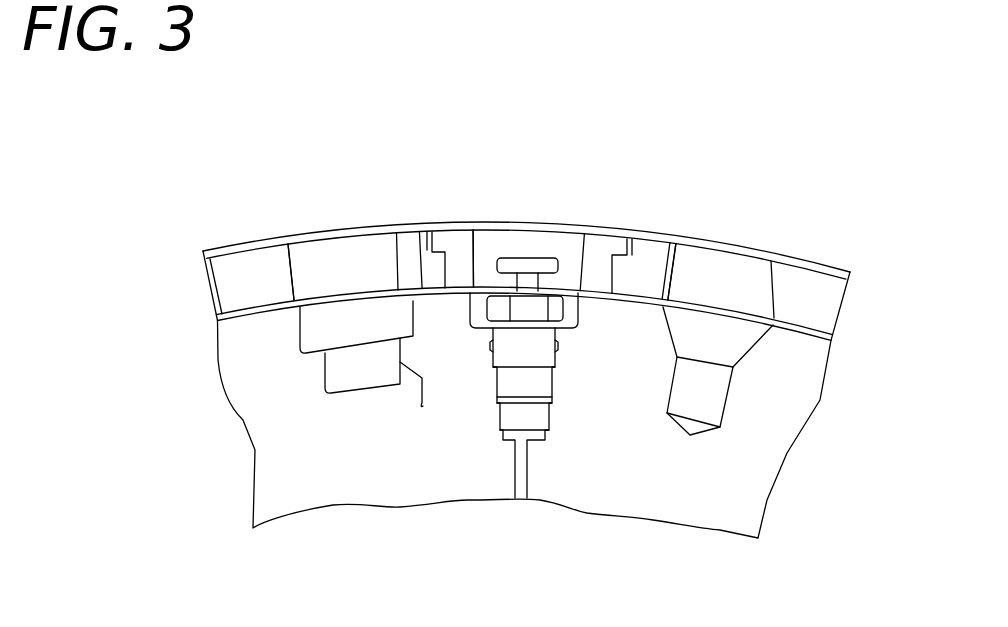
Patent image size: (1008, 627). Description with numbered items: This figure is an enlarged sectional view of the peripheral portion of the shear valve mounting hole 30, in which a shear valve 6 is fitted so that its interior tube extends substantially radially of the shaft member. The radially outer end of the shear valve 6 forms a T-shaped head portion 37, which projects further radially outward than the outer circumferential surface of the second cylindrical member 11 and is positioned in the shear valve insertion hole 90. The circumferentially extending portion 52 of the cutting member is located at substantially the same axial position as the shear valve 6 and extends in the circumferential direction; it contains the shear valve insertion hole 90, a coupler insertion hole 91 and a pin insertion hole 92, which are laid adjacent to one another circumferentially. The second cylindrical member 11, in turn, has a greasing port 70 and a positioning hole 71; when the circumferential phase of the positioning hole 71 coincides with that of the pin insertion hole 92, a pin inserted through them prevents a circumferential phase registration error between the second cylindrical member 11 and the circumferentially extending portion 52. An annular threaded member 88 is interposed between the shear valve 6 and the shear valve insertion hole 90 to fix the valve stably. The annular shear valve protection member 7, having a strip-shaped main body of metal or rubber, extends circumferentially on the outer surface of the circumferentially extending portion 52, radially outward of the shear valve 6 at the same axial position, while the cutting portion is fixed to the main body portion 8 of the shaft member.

The shear valve 6 is at (527, 305).
The shear valve protection member 7 is at (502, 222).
The main body portion 8 is at (814, 262).
The second cylindrical member 11 is at (627, 340).
The shear valve mounting hole 30 is at (557, 333).
The head portion 37 is at (540, 293).
The circumferentially extending portion 52 is at (250, 245).
The greasing port 70 is at (397, 300).
The positioning hole 71 is at (740, 350).
The annular threaded member 88 is at (453, 238).
The shear valve insertion hole 90 is at (612, 273).
The coupler insertion hole 91 is at (288, 276).
The pin insertion hole 92 is at (757, 290).